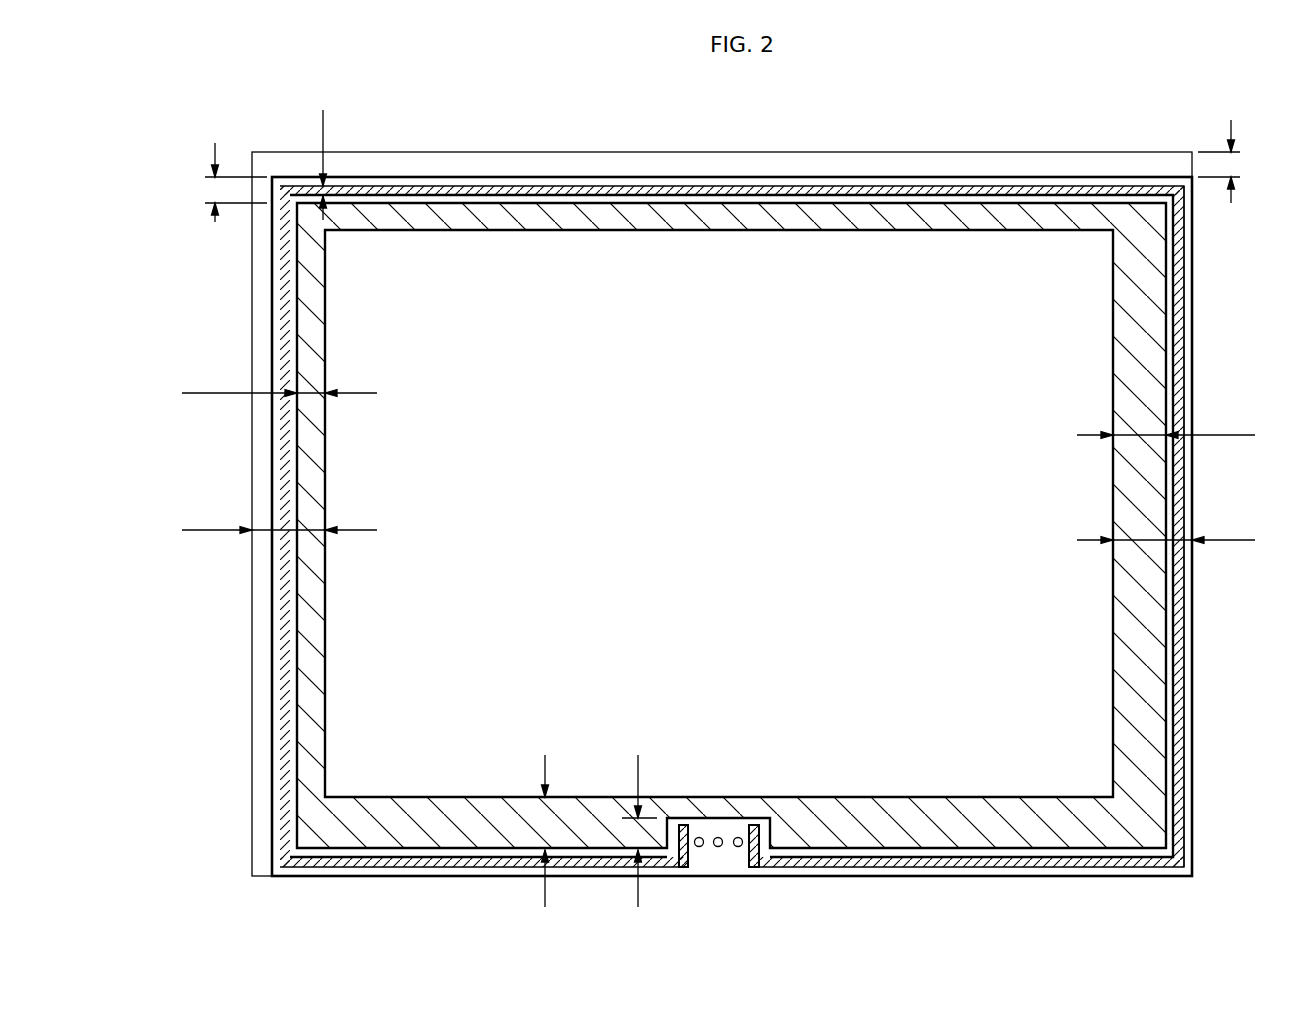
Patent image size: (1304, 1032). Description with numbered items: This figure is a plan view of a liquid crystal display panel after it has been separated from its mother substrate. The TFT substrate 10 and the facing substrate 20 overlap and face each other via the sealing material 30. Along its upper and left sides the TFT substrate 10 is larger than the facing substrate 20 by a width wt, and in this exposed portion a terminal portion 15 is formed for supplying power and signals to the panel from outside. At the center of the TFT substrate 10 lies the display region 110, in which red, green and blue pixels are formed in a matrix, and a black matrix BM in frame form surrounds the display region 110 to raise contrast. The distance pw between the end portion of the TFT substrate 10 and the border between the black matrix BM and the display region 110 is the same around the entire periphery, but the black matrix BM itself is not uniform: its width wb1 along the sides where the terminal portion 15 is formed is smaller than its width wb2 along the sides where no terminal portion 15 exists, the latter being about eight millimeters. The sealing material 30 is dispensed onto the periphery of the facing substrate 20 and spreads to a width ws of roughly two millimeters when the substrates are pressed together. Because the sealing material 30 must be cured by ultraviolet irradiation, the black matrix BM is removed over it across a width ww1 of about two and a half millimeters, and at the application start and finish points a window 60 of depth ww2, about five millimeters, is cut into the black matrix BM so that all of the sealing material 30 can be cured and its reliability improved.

The TFT substrate 10 is at (1025, 152).
The terminal portion 15 is at (906, 168).
The facing substrate 20 is at (795, 178).
The sealing material 30 is at (1185, 626).
The window 60 is at (766, 838).
The display region 110 is at (657, 252).
The black matrix BM is at (1158, 303).
The width of the spread sealing material ws is at (306, 165).
The width of the portion from which the black matrix is removed ww1 is at (212, 182).
The depth of the window ww2 is at (617, 831).
The width by which the TFT substrate is larger than the facing substrate wt is at (1235, 161).
The width of the black matrix along the terminal-portion sides wb1 is at (279, 380).
The width of the black matrix along the non-terminal sides wb2 is at (867, 654).
The distance between the TFT substrate end portion and the display region border pw is at (718, 520).